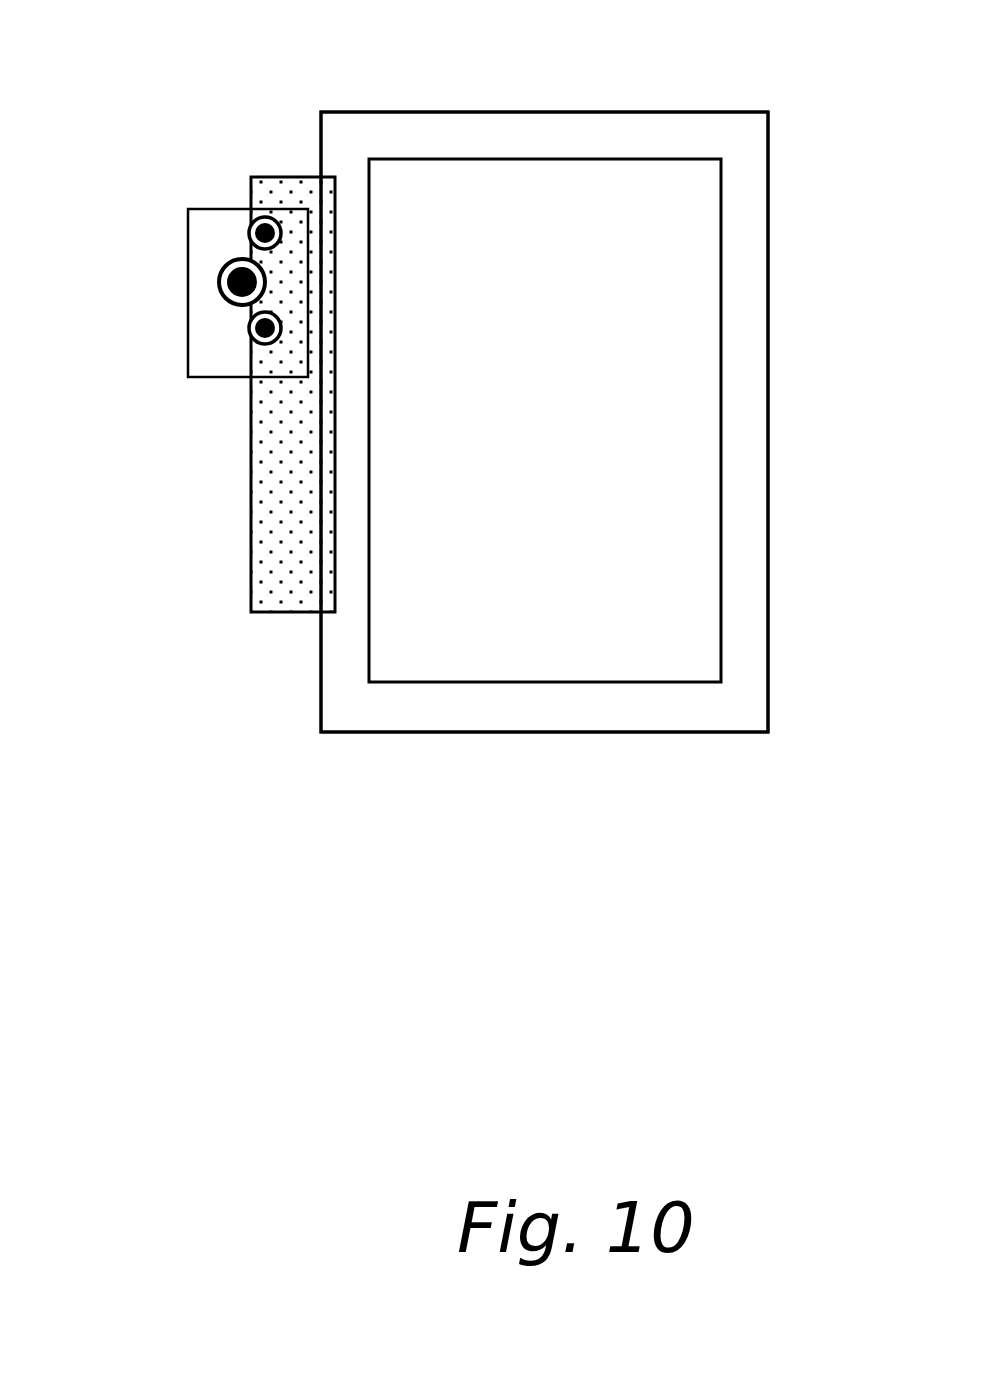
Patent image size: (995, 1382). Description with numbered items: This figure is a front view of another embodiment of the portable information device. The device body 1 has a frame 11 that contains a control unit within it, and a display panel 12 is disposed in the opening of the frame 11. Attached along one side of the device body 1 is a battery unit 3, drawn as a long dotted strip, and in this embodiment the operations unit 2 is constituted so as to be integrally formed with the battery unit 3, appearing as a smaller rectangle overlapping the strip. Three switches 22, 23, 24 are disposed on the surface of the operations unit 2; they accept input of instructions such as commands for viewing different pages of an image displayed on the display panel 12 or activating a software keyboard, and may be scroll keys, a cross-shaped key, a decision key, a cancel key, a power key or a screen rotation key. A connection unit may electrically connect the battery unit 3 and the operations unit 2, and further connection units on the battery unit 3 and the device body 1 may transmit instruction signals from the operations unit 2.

The device body 1 is at (672, 103).
The frame 11 is at (745, 292).
The display panel 12 is at (688, 227).
The operations unit 2 is at (187, 233).
The switch 22 is at (248, 225).
The switch 23 is at (220, 290).
The switch 24 is at (248, 335).
The battery unit 3 is at (223, 572).